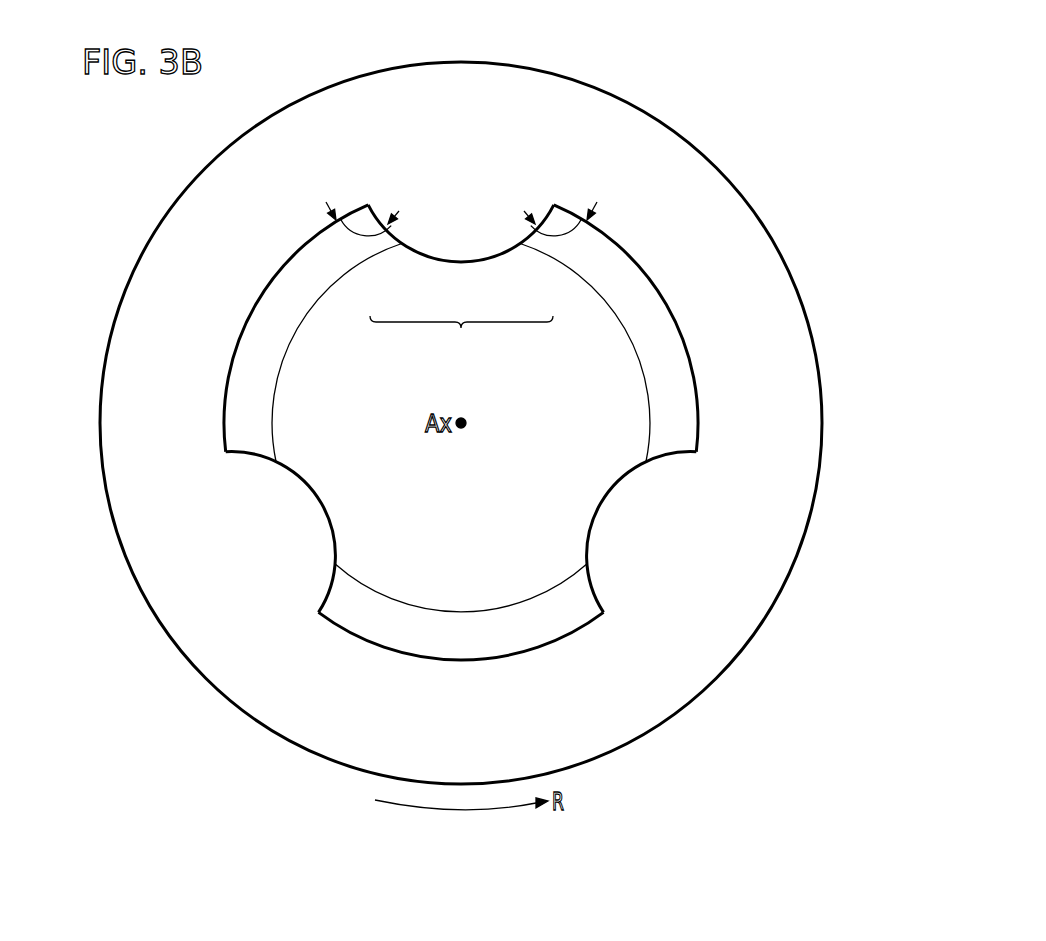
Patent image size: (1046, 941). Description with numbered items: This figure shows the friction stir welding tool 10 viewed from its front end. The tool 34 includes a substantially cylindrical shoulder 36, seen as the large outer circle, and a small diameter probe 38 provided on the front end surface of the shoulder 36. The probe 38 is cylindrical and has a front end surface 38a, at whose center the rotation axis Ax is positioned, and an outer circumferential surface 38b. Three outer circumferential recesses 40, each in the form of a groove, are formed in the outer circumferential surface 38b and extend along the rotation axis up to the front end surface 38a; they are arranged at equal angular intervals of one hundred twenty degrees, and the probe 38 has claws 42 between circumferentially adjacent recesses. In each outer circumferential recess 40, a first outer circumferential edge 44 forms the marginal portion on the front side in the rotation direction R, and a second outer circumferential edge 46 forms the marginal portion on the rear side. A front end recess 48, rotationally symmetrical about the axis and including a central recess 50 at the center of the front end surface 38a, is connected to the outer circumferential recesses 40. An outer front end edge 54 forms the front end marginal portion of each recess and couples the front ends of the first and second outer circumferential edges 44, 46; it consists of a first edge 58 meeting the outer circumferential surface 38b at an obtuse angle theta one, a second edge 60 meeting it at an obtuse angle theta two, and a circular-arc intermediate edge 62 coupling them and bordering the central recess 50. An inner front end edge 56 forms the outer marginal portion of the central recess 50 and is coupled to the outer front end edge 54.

The welding tool 10 is at (461, 423).
The tool 34 is at (776, 117).
The shoulder 36 is at (749, 203).
The probe 38 is at (676, 295).
The front end surface 38a is at (492, 643).
The outer circumferential surface 38b is at (382, 648).
The outer circumferential recess 40 is at (466, 232).
The claw 42 is at (278, 272).
The first outer circumferential edge 44 is at (368, 205).
The second outer circumferential edge 46 is at (554, 205).
The front end recess 48 is at (547, 553).
The central recess 50 is at (590, 624).
The outer front end edge 54 is at (461, 339).
The inner front end edge 56 is at (605, 297).
The first edge 58 is at (392, 240).
The second edge 60 is at (530, 240).
The intermediate edge 62 is at (461, 263).